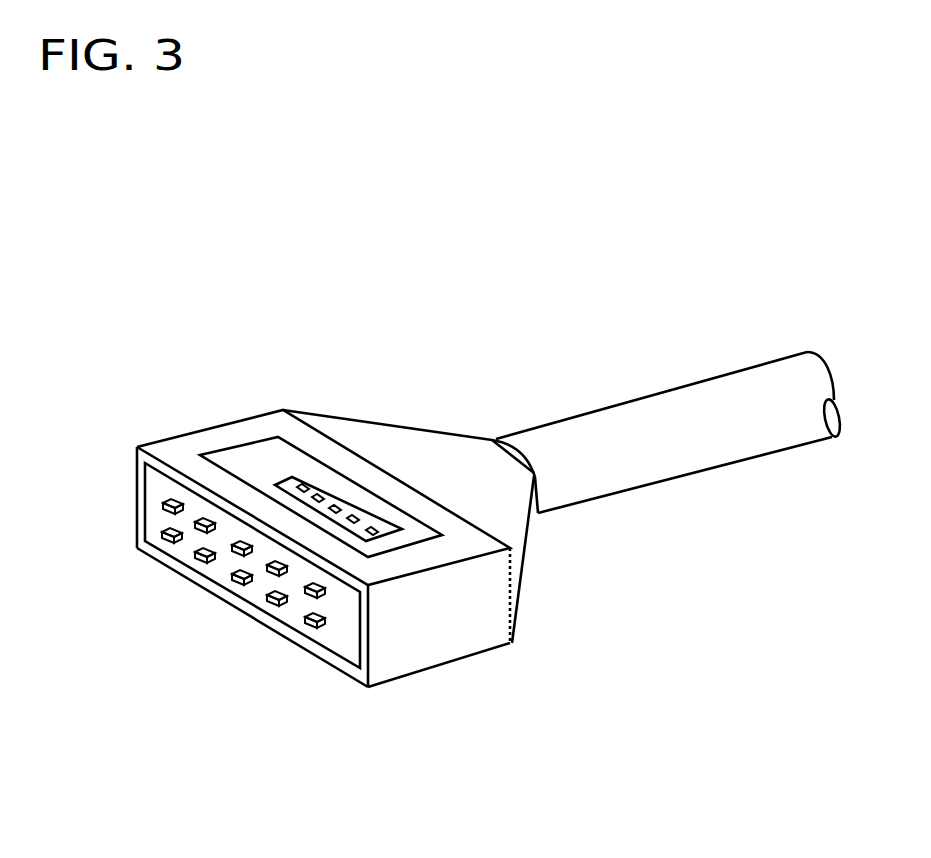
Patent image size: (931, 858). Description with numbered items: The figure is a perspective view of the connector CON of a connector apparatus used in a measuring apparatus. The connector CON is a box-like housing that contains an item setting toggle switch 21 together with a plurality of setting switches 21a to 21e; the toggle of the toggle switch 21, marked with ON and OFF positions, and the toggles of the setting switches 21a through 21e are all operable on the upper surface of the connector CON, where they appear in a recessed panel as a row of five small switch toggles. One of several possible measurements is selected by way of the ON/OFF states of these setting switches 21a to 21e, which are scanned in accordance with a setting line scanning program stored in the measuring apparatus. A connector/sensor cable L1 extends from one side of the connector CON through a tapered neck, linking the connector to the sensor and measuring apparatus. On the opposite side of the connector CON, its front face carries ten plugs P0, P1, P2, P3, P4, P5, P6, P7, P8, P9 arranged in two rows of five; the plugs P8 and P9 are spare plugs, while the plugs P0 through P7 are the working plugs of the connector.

The item setting toggle switch 21 is at (253, 440).
The setting switch 21a is at (303, 488).
The setting switch 21e is at (376, 528).
The connector/sensor cable L1 is at (677, 403).
The connector CON is at (488, 632).
The plug P0 is at (163, 505).
The plug P1 is at (190, 533).
The plug P2 is at (232, 556).
The plug P3 is at (270, 575).
The plug P4 is at (312, 597).
The plug P5 is at (160, 540).
The plug P6 is at (198, 560).
The plug P7 is at (243, 583).
The spare plug P8 is at (283, 607).
The spare plug P9 is at (320, 628).